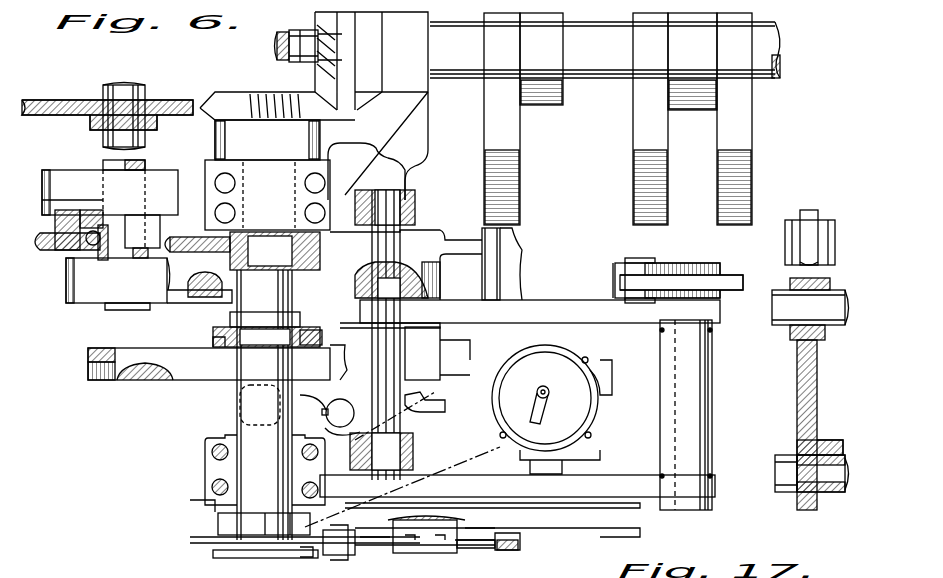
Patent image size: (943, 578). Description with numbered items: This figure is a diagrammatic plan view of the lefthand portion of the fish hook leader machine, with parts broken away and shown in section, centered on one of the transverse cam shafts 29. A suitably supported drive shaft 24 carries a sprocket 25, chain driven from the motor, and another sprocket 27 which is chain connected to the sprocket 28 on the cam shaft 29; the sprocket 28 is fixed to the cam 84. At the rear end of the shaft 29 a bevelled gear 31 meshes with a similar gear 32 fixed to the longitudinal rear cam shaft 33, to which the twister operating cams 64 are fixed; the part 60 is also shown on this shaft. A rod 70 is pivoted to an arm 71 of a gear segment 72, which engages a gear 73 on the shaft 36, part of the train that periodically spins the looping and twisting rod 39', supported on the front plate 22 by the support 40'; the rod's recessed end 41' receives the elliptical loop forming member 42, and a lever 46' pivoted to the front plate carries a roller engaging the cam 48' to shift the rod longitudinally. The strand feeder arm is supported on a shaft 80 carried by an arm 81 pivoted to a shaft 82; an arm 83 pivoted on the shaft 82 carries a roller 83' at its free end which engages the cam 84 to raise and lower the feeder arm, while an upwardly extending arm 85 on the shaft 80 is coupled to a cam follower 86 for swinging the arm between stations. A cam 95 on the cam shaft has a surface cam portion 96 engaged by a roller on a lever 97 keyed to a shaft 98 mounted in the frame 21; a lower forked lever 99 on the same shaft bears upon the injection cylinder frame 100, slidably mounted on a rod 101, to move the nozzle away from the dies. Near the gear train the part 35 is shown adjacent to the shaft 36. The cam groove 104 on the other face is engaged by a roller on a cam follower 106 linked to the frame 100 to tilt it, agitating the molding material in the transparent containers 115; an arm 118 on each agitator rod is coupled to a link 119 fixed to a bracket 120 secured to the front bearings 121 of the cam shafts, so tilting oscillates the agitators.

The frame 21 is at (424, 130).
The front plate 22 is at (560, 522).
The drive shaft 24 is at (143, 148).
The sprocket 25 is at (95, 100).
The sprocket 27 is at (55, 252).
The sprocket 28 is at (185, 235).
The transverse cam shaft 29 is at (200, 322).
The bevelled gear 31 is at (252, 74).
The bevelled gear 32 is at (315, 80).
The longitudinal rear cam shaft 33 is at (613, 78).
The pin 35 is at (780, 323).
The shaft 36 is at (838, 495).
The looping and twisting rod 39' is at (425, 553).
The support 40' is at (426, 547).
The recess 41' is at (484, 559).
The elliptical loop forming member 42 is at (515, 550).
The lever 46' is at (343, 551).
The cam 48' is at (277, 528).
The roller 60 is at (655, 180).
The twister operating cam 64 is at (518, 165).
The rod 70 is at (808, 212).
The arm 71 is at (832, 228).
The gear segment 72 is at (797, 387).
The gear 73 is at (797, 442).
The shaft 80 is at (660, 424).
The arm 81 is at (628, 478).
The shaft 82 is at (400, 428).
The arm 83 is at (510, 292).
The roller 83' is at (416, 280).
The cam 84 is at (177, 280).
The upwardly extending arm 85 is at (613, 262).
The cam follower 86 is at (733, 268).
The cam 95 is at (88, 378).
The surface cam portion 96 is at (150, 382).
The lever 97 is at (300, 392).
The shaft 98 is at (335, 365).
The lower forked lever 99 is at (412, 380).
The injection cylinder frame 100 is at (467, 240).
The rod 101 is at (430, 392).
The cam groove 104 is at (105, 355).
The cam follower 106 is at (218, 342).
The transparent container 115 is at (560, 386).
The arm 118 is at (533, 420).
The link 119 is at (470, 470).
The bracket 120 is at (300, 520).
The front bearing 121 is at (205, 455).